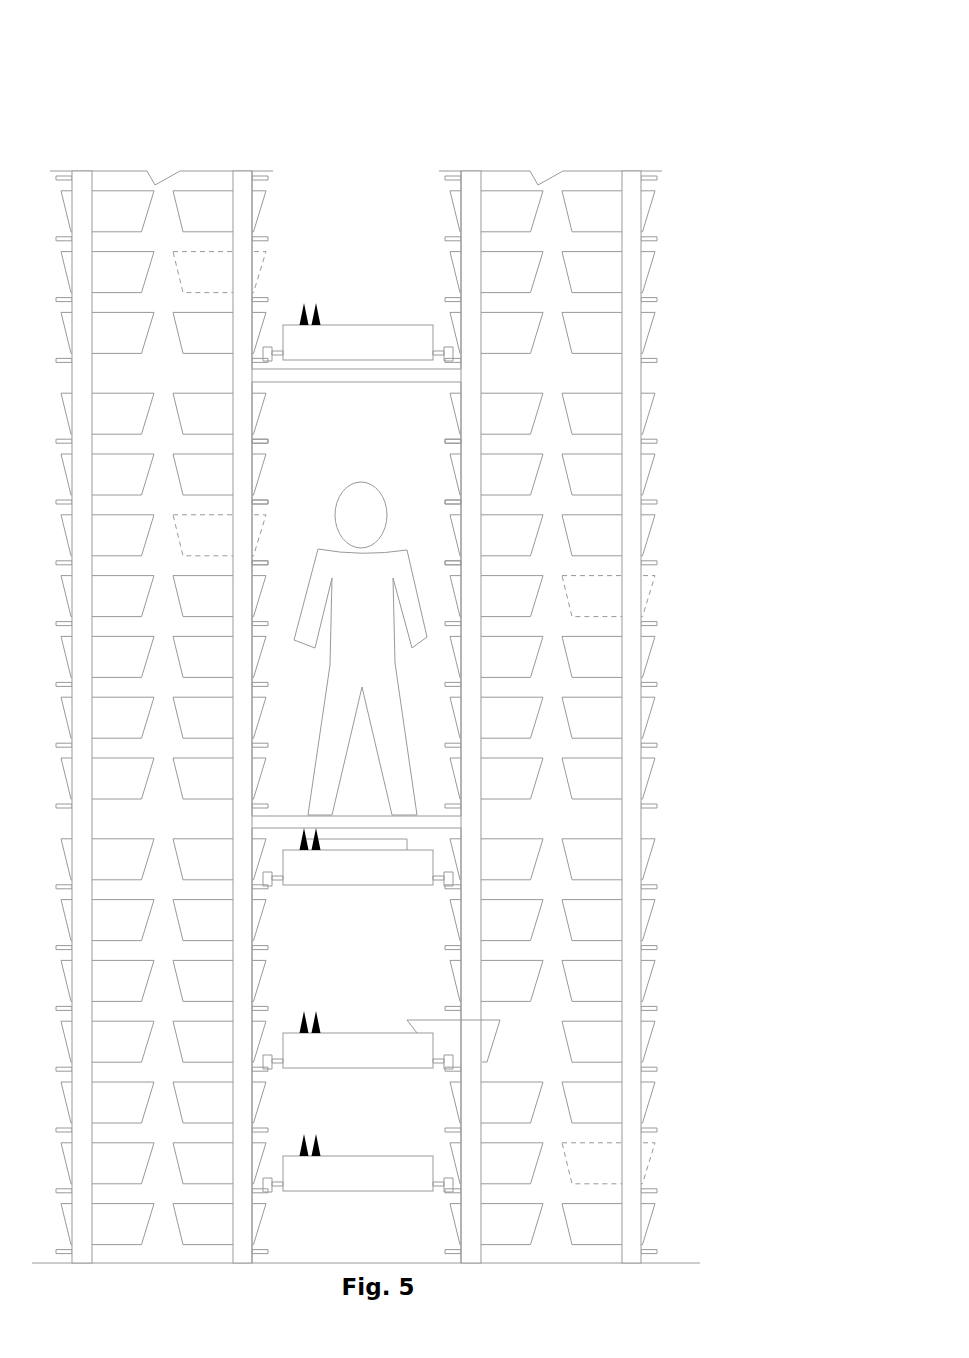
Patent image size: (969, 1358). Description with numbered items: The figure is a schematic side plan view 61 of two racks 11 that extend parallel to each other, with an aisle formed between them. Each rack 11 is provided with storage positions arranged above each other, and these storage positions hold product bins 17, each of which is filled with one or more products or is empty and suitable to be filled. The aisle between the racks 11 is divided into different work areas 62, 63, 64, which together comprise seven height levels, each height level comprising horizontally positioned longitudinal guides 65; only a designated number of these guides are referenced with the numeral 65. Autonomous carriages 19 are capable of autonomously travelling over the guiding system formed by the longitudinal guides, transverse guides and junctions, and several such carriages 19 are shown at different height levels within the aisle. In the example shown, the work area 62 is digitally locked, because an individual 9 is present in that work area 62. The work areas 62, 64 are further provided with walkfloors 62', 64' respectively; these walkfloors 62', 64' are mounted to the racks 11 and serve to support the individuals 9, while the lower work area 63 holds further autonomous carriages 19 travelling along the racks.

The individual 9 is at (399, 557).
The rack 11 is at (171, 182).
The product bin 17 is at (598, 331).
The autonomous carriage 19 is at (348, 347).
The schematic side plan view 61 is at (676, 99).
The work area 62 is at (356, 599).
The walkfloor 62' is at (356, 782).
The work area 63 is at (356, 1045).
The work area 64 is at (356, 270).
The walkfloor 64' is at (356, 310).
The longitudinal guide 65 is at (270, 565).